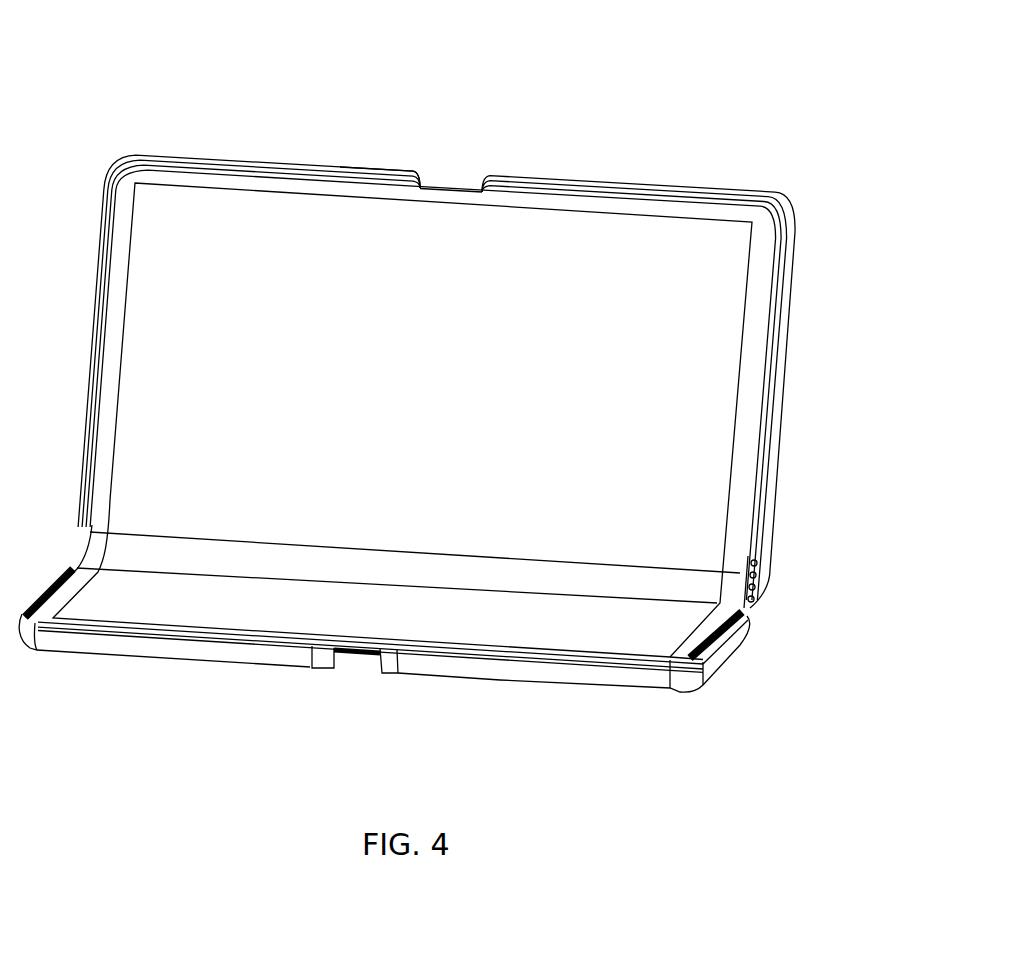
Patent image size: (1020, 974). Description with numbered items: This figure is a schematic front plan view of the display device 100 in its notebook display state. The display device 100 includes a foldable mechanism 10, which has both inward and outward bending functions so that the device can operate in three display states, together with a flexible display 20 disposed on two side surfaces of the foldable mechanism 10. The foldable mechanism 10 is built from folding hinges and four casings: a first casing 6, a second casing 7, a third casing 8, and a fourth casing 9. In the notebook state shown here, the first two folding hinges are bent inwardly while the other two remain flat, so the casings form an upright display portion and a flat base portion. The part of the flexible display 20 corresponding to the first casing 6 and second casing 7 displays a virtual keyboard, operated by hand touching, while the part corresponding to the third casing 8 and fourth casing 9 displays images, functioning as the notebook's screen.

The display device 100 is at (134, 99).
The first casing 6 is at (363, 170).
The third casing 8 is at (788, 248).
The foldable mechanism 10 is at (653, 445).
The flexible display 20 is at (762, 533).
The second casing 7 is at (187, 648).
The fourth casing 9 is at (562, 670).